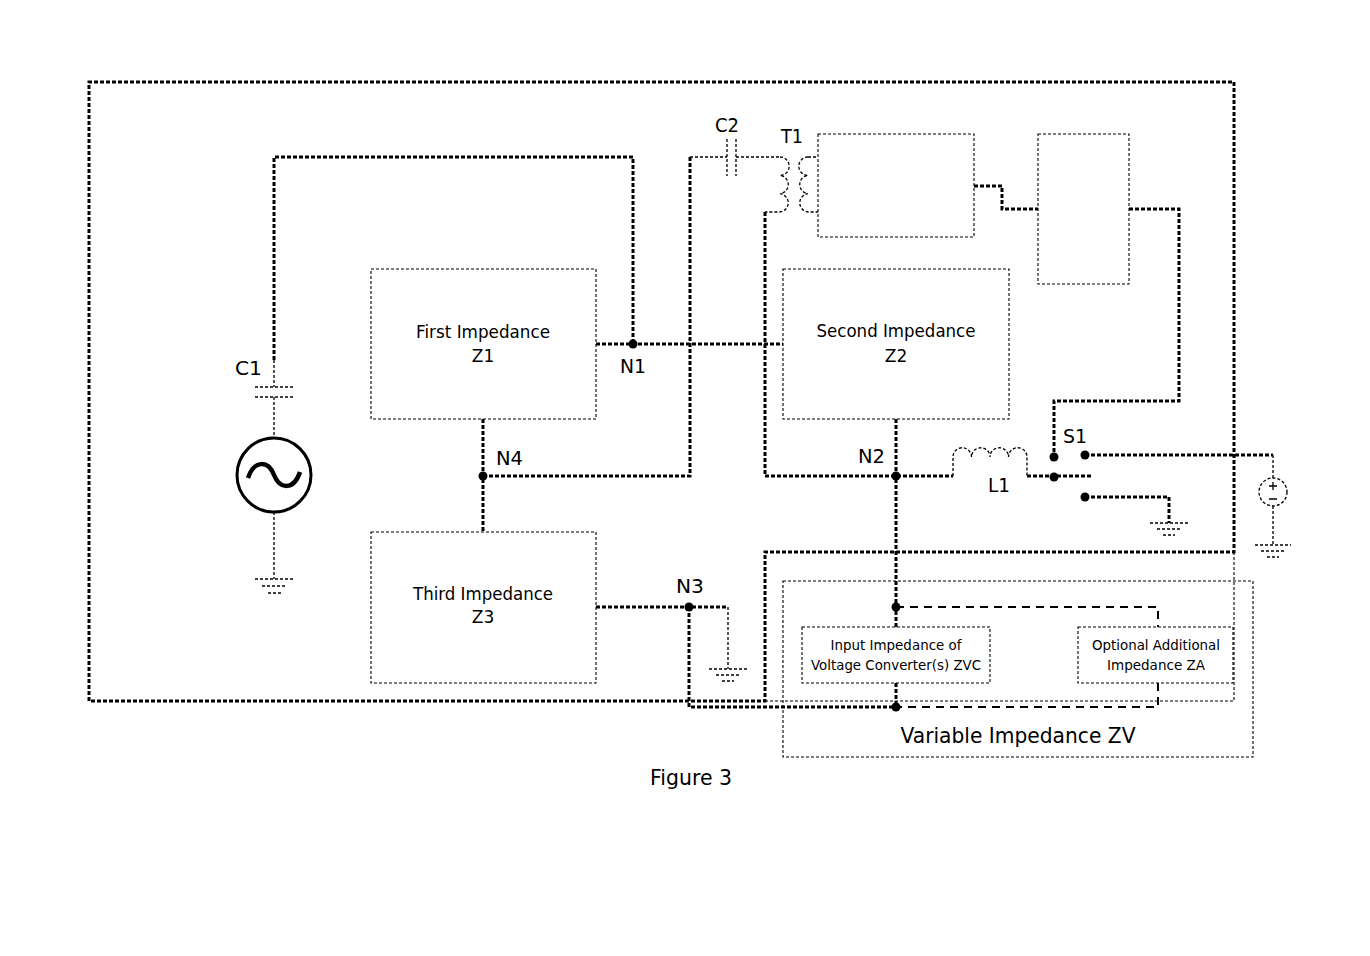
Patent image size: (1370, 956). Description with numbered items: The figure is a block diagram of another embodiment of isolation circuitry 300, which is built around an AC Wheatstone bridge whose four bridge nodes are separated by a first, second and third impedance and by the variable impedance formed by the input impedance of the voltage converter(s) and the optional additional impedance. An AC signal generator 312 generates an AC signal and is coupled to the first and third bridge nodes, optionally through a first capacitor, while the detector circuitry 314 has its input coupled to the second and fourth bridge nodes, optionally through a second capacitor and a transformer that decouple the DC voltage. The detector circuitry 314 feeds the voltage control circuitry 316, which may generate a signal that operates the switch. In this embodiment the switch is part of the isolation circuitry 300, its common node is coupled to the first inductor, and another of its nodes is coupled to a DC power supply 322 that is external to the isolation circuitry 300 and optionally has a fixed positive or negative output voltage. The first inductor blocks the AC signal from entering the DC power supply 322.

The isolation circuitry 300 is at (661, 391).
The AC signal generator 312 is at (217, 495).
The detector circuitry 314 is at (928, 185).
The voltage control circuitry 316 is at (1108, 295).
The DC power supply 322 is at (1295, 513).